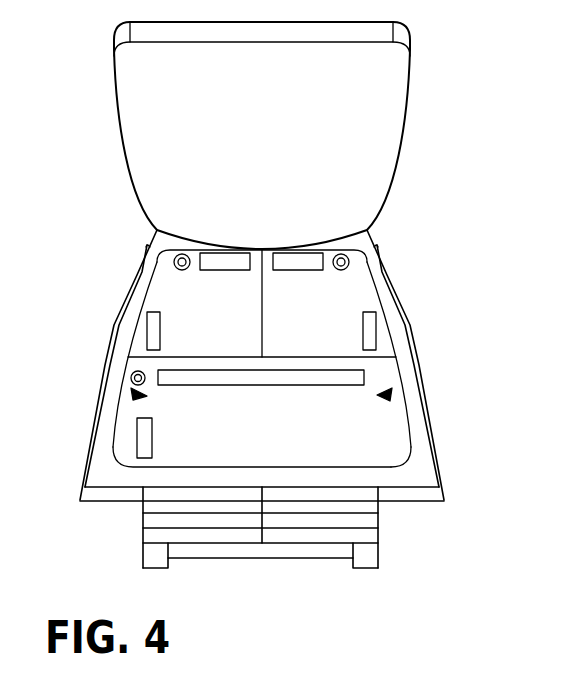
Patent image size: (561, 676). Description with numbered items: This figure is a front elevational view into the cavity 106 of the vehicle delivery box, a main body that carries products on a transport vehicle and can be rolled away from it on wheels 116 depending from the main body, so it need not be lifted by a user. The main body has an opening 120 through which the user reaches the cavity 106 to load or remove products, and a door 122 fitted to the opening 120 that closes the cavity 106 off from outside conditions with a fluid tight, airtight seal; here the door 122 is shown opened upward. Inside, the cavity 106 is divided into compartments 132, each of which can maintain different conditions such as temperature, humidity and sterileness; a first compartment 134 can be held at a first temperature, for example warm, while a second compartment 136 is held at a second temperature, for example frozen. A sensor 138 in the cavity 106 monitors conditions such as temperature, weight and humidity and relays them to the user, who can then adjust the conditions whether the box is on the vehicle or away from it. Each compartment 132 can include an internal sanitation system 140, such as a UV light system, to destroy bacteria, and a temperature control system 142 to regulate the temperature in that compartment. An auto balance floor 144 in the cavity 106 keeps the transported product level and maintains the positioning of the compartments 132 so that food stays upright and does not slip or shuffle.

The cavity 106 is at (134, 394).
The wheel 116 is at (375, 557).
The opening 120 is at (388, 396).
The door 122 is at (380, 115).
The compartments 132 is at (357, 283).
The first compartment 134 is at (162, 290).
The second compartment 136 is at (388, 427).
The sensor 138 is at (173, 254).
The sanitation system 140 is at (190, 380).
The temperature control system 142 is at (145, 438).
The auto balance floor 144 is at (397, 458).